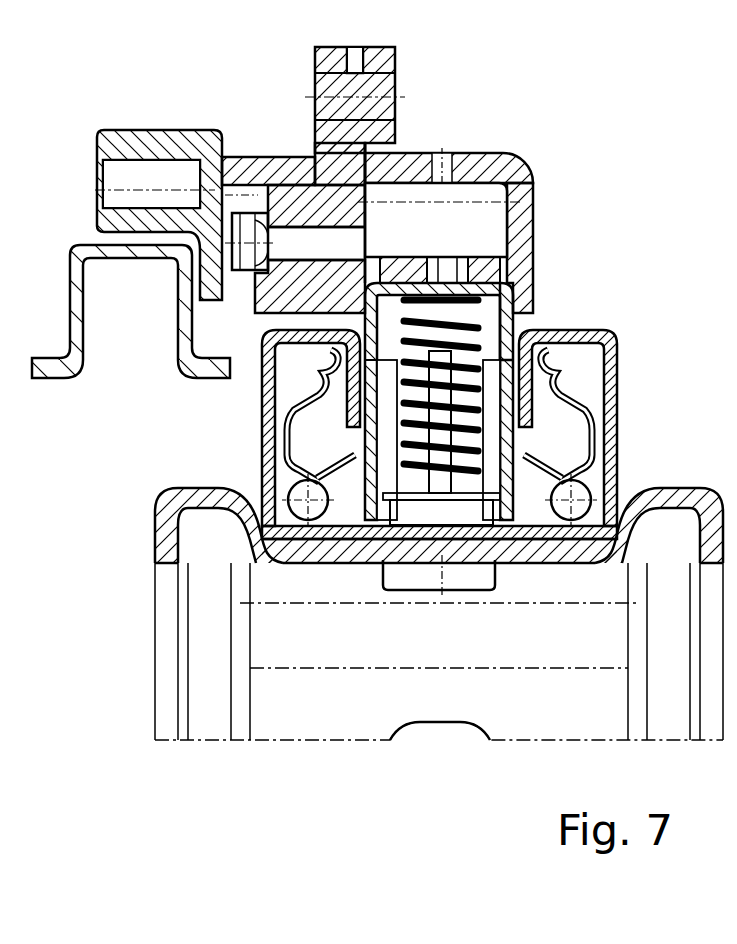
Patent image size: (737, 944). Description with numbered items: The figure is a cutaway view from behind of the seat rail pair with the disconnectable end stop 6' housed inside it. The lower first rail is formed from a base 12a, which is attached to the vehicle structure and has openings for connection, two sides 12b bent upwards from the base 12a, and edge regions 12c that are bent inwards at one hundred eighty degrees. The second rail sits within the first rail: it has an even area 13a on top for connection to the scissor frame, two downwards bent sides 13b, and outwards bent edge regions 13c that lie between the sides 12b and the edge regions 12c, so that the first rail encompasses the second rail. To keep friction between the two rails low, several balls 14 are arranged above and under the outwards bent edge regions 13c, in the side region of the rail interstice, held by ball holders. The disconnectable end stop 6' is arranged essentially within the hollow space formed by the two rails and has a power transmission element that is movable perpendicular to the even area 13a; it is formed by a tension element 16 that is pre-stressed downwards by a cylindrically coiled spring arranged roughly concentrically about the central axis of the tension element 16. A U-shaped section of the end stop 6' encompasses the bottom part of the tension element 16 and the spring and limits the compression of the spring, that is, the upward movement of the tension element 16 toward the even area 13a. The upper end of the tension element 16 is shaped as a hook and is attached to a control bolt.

The disconnectable end stop 6' is at (439, 690).
The base 12a is at (383, 540).
The sides 12b is at (617, 442).
The edge regions 12c is at (530, 403).
The even area 13a is at (477, 323).
The sides 13b is at (500, 360).
The edge regions 13c is at (272, 443).
The balls 14 is at (298, 375).
The tension element 16 is at (510, 297).